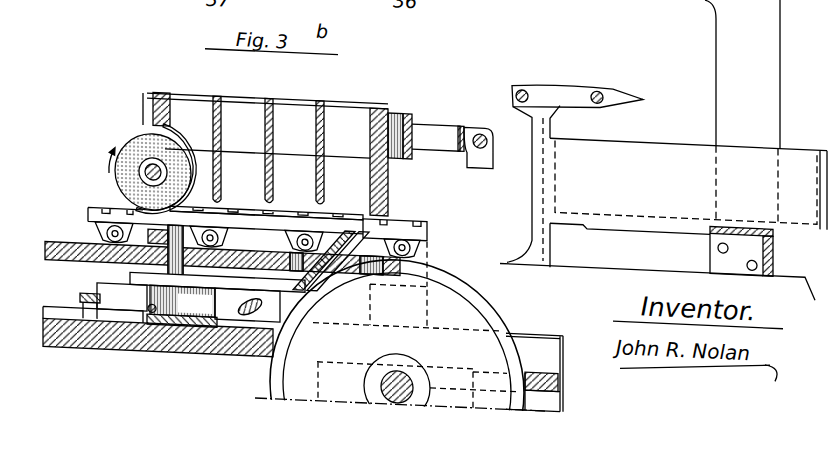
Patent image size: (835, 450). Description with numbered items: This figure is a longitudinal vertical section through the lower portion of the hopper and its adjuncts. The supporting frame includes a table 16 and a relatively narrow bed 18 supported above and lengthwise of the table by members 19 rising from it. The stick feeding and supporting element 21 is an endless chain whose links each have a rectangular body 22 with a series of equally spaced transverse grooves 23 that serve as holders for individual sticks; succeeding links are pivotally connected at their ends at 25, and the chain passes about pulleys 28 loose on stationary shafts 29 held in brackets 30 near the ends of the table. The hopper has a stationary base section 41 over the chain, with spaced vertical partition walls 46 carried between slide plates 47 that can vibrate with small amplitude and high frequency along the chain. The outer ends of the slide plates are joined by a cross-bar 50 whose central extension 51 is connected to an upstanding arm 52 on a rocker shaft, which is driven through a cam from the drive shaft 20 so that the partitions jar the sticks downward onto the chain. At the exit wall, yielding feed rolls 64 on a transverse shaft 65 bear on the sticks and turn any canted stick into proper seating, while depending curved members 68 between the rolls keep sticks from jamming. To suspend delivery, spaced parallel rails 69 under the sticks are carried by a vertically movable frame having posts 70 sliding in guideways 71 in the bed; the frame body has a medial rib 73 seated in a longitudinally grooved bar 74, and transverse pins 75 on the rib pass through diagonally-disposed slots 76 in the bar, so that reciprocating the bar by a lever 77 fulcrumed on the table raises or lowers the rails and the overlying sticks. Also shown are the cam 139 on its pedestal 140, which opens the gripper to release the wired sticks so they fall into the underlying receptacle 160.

The table 16 is at (60, 351).
The bed 18 is at (48, 253).
The members 19 is at (420, 303).
The drive shaft 20 is at (340, 257).
The stick feeding and supporting element 21 is at (433, 224).
The rectangular body 22 is at (110, 218).
The transverse grooves 23 is at (420, 214).
The pivotal connection 25 is at (435, 245).
The pulleys 28 is at (457, 383).
The stationary shafts 29 is at (370, 387).
The brackets 30 is at (452, 377).
The base section 41 is at (378, 186).
The partition walls 46 is at (267, 175).
The slide plates 47 is at (350, 108).
The cross-bar 50 is at (408, 110).
The central extension 51 is at (442, 121).
The upstanding arm 52 is at (495, 151).
The feed rolls 64 is at (133, 154).
The transverse shaft 65 is at (151, 172).
The curved members 68 is at (185, 110).
The rails 69 is at (330, 220).
The posts 70 is at (213, 227).
The guideways 71 is at (140, 269).
The medial rib 73 is at (182, 301).
The grooved bar 74 is at (175, 329).
The transverse pins 75 is at (152, 320).
The diagonally-disposed slots 76 is at (313, 316).
The lever 77 is at (78, 303).
The cam 139 is at (596, 71).
The pedestal 140 is at (532, 232).
The receptacle 160 is at (688, 115).